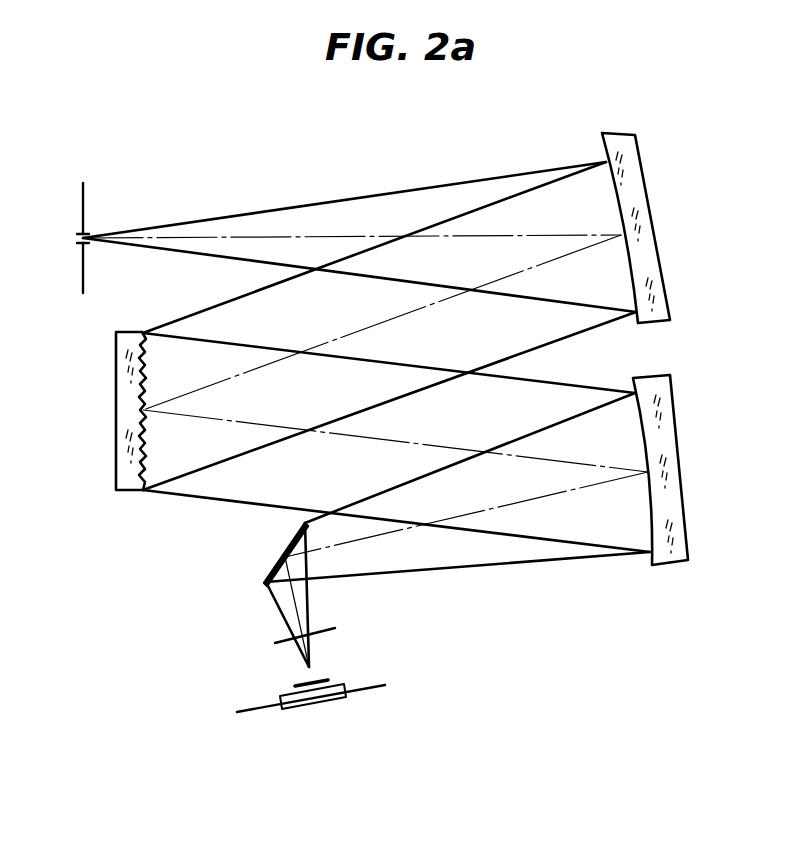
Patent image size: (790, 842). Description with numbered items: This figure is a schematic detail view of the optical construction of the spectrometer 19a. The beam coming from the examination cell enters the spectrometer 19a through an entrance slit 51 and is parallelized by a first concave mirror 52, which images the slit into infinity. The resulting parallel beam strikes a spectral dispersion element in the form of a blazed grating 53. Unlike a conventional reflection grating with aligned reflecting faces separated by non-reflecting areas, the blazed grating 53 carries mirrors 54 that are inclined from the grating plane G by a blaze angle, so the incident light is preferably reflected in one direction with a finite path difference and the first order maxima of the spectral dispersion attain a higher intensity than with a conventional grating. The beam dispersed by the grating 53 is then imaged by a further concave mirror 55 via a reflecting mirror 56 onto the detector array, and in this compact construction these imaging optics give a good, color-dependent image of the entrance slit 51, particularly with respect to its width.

The spectrometer 19a is at (165, 612).
The entrance slit 51 is at (72, 237).
The first concave mirror 52 is at (652, 238).
The blazed grating 53 is at (116, 399).
The mirrors 54 is at (148, 372).
The further concave mirror 55 is at (672, 461).
The reflecting mirror 56 is at (258, 598).
The grating plane G is at (126, 326).